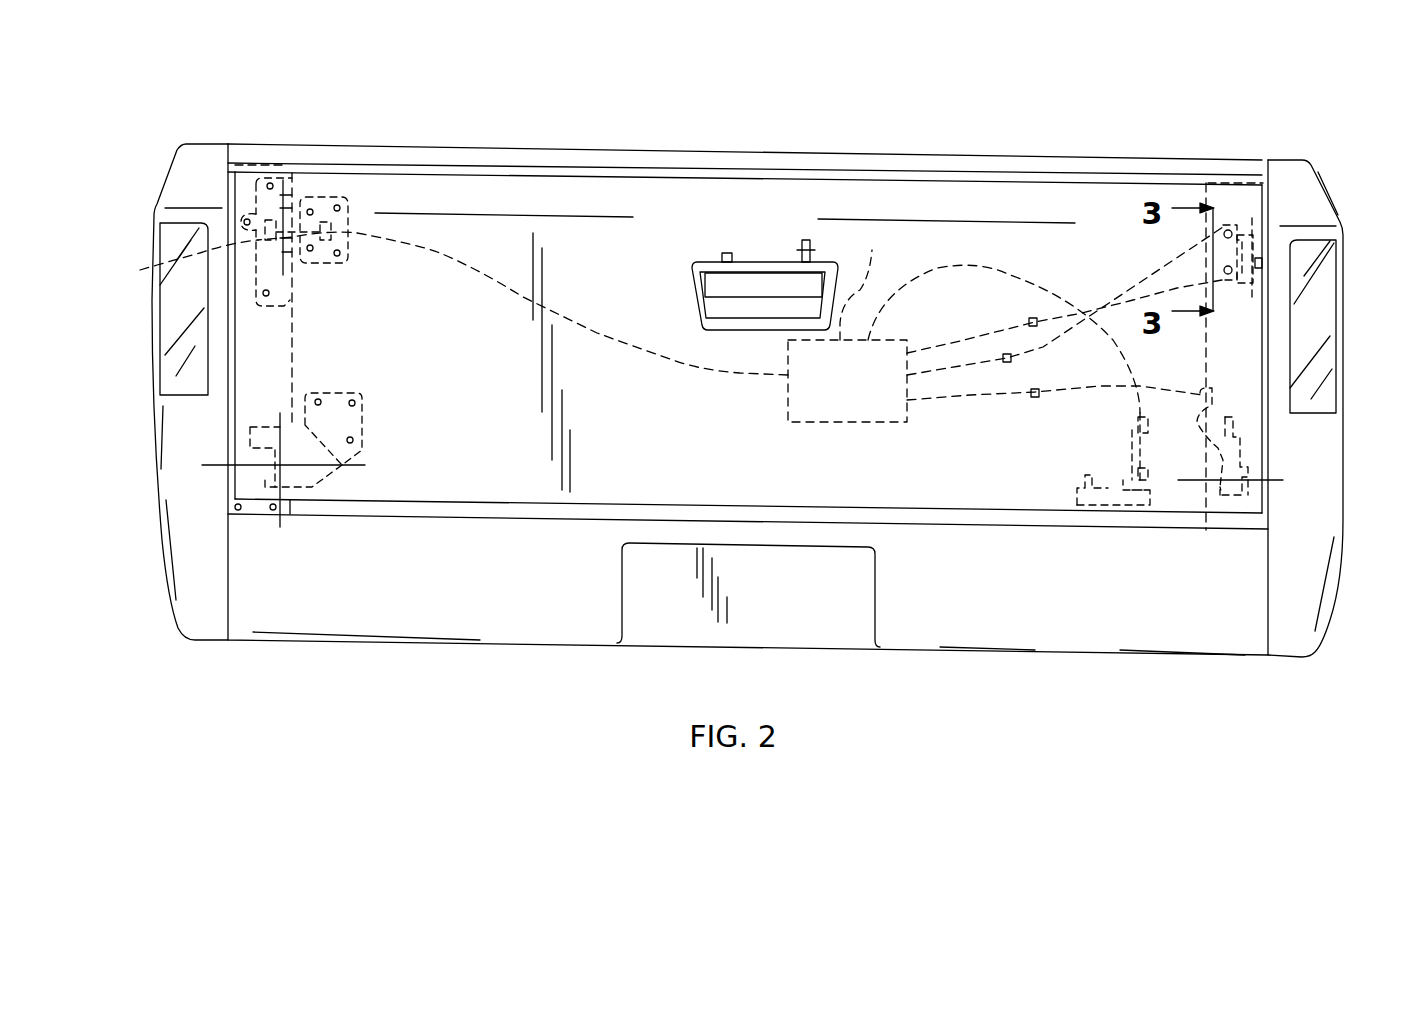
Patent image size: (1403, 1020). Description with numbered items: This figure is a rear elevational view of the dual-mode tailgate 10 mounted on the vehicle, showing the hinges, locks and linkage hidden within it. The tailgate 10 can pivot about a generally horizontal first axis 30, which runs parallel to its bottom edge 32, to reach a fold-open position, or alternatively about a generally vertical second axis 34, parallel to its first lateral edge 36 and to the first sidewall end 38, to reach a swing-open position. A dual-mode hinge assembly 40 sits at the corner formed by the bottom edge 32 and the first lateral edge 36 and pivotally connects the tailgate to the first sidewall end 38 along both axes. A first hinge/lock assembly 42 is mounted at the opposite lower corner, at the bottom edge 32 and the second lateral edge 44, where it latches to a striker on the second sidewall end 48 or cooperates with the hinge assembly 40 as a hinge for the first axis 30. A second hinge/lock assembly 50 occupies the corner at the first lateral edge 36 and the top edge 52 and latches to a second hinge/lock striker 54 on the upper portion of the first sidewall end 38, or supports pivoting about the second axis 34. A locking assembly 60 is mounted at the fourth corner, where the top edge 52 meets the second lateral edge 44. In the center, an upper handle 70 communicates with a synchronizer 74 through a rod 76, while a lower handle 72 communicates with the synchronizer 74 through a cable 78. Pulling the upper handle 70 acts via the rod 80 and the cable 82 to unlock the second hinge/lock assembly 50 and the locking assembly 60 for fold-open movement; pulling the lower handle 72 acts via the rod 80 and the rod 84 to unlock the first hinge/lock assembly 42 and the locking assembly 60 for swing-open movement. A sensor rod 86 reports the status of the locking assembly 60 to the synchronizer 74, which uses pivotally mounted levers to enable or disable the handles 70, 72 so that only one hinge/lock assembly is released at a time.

The tailgate 10 is at (590, 185).
The first axis 30 is at (353, 465).
The bottom edge 32 is at (503, 503).
The second axis 34 is at (283, 195).
The first lateral edge 36 is at (232, 332).
The first sidewall end 38 is at (297, 335).
The dual-mode hinge assembly 40 is at (378, 418).
The first hinge/lock assembly 42 is at (1262, 456).
The second lateral edge 44 is at (1264, 362).
The second sidewall end 48 is at (1263, 337).
The second hinge/lock assembly 50 is at (325, 188).
The top edge 52 is at (482, 148).
The second hinge/lock striker 54 is at (165, 265).
The locking assembly 60 is at (1240, 195).
The upper handle 70 is at (757, 283).
The lower handle 72 is at (1103, 500).
The synchronizer 74 is at (848, 423).
The rod 76 is at (863, 280).
The cable 78 is at (1015, 273).
The rod 80 is at (970, 337).
The cable 82 is at (600, 333).
The rod 84 is at (1073, 393).
The sensor rod 86 is at (1163, 272).